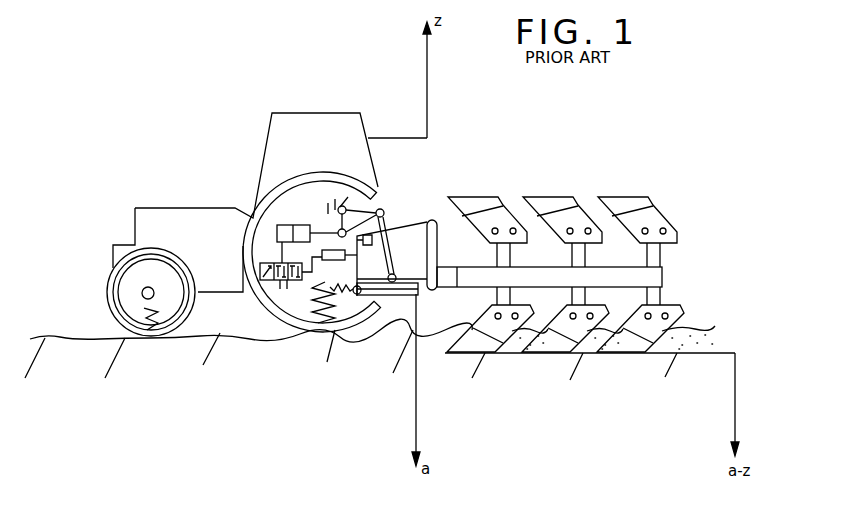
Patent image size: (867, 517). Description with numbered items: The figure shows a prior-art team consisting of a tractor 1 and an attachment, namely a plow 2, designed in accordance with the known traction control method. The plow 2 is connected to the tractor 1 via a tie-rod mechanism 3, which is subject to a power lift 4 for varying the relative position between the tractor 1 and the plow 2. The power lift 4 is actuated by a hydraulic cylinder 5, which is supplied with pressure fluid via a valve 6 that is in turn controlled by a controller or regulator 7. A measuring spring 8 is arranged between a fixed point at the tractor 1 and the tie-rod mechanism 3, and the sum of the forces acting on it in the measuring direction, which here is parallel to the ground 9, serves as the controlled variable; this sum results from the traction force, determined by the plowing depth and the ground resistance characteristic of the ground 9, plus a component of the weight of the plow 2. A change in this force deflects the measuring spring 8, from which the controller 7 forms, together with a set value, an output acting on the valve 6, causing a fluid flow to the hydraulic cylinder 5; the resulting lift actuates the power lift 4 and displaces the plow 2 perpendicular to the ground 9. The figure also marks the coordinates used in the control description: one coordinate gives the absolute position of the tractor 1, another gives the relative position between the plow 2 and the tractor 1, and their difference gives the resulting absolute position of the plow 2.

The tractor 1 is at (190, 227).
The plow 2 is at (646, 213).
The tie-rod mechanism 3 is at (409, 229).
The power lift 4 is at (386, 196).
The hydraulic cylinder 5 is at (282, 225).
The valve 6 is at (272, 288).
The controller 7 is at (330, 256).
The measuring spring 8 is at (328, 284).
The ground 9 is at (557, 432).